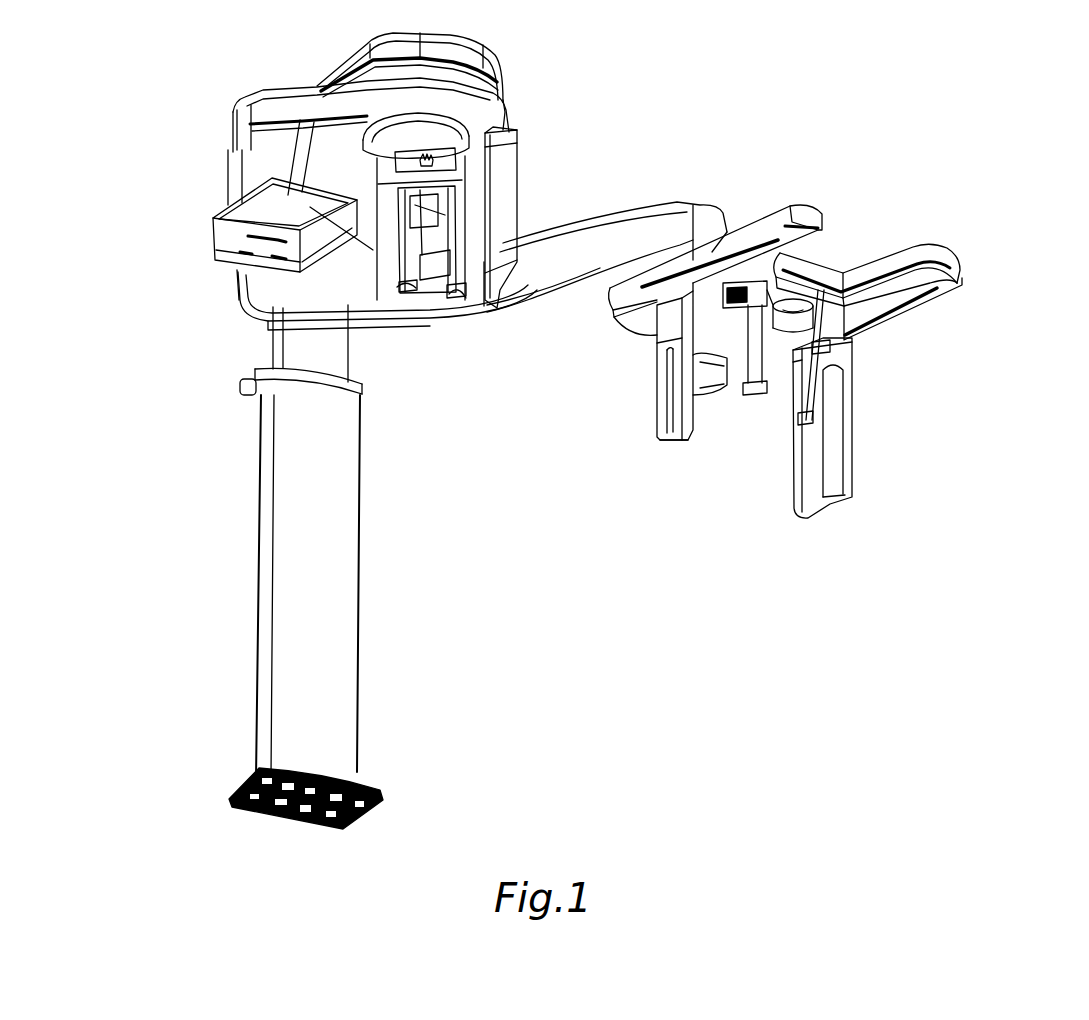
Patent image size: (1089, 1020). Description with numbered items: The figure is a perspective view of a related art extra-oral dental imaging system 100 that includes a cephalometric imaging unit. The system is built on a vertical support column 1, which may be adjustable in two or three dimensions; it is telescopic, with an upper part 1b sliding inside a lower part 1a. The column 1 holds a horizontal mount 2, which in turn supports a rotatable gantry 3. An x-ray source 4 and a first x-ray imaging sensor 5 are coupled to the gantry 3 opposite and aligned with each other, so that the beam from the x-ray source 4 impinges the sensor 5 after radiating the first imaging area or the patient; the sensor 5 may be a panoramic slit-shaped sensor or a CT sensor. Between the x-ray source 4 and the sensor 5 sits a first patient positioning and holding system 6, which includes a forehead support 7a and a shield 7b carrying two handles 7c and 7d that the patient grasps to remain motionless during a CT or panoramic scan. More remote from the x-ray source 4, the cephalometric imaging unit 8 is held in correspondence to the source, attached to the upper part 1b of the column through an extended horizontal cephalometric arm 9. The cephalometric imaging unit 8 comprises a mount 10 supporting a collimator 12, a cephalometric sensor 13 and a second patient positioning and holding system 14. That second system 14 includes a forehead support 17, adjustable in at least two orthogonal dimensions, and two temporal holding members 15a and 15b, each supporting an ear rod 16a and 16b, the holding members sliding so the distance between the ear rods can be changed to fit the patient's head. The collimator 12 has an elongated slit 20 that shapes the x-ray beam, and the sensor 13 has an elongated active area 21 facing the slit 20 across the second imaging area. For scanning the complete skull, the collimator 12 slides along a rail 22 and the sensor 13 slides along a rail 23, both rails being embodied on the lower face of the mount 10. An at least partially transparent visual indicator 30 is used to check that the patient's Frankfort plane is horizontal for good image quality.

The support column 1 is at (229, 546).
The lower part 1a is at (318, 671).
The upper part 1b is at (305, 342).
The horizontal mount 2 is at (500, 62).
The rotatable gantry 3 is at (507, 117).
The x-ray source 4 is at (232, 234).
The first x-ray imaging sensor 5 is at (507, 190).
The first patient positioning and holding system 6 is at (423, 400).
The forehead support 7a is at (418, 203).
The shield 7b is at (418, 241).
The handle 7c is at (413, 288).
The handle 7d is at (463, 288).
The cephalometric imaging unit 8 is at (865, 200).
The cephalometric arm 9 is at (655, 222).
The mount 10 is at (805, 210).
The collimator 12 is at (660, 362).
The cephalometric sensor 13 is at (850, 480).
The second patient positioning and holding system 14 is at (849, 311).
The temporal holding member 15a is at (753, 347).
The temporal holding member 15b is at (817, 383).
The ear rod 16a is at (760, 400).
The ear rod 16b is at (807, 415).
The forehead support 17 is at (818, 355).
The slit 20 is at (685, 430).
The active area 21 is at (833, 508).
The rail 22 is at (750, 292).
The rail 23 is at (923, 297).
The visual indicator 30 is at (685, 445).
The extra-oral dental imaging system 100 is at (752, 694).